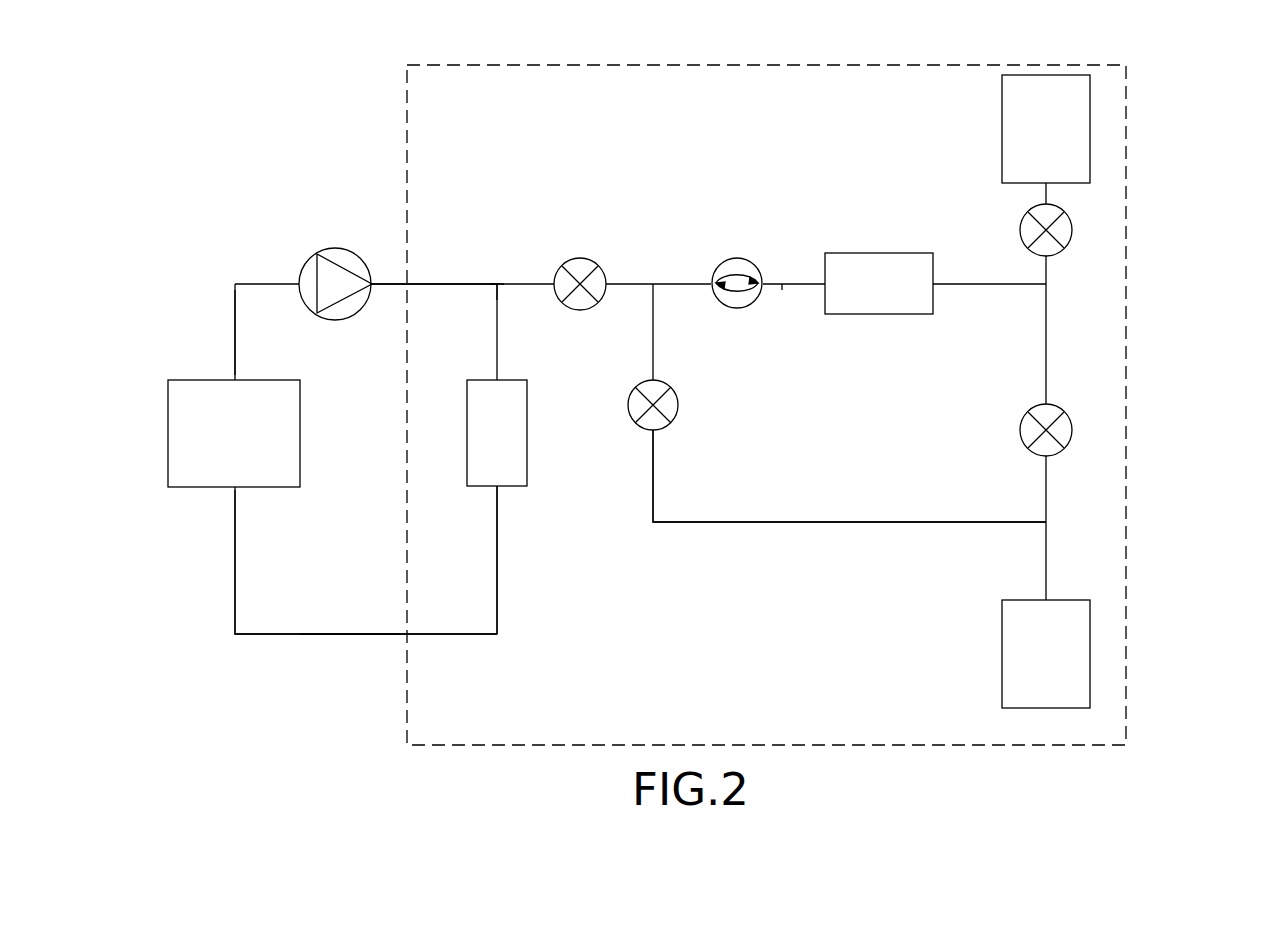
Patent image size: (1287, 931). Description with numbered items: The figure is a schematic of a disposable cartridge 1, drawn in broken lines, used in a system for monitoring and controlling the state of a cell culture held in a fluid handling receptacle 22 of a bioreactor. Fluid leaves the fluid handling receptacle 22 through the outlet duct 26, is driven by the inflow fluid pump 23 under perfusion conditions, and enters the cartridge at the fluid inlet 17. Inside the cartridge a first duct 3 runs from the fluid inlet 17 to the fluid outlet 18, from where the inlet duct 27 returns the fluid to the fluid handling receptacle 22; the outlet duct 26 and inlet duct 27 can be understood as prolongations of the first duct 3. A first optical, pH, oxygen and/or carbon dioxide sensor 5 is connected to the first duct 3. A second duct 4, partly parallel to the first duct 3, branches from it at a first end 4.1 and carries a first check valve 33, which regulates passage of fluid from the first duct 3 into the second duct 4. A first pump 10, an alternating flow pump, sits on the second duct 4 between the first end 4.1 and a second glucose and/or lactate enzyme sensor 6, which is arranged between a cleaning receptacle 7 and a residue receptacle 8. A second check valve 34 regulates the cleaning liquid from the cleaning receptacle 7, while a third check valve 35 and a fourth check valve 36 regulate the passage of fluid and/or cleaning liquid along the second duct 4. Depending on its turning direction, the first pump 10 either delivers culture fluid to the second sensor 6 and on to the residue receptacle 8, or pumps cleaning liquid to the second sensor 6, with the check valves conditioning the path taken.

The disposable cartridge 1 is at (1148, 310).
The first duct 3 is at (497, 541).
The second duct 4 is at (653, 455).
The first end 4.1 is at (497, 290).
The first sensor 5 is at (497, 433).
The second sensor 6 is at (879, 283).
The cleaning receptacle 7 is at (1046, 129).
The residue receptacle 8 is at (1046, 654).
The first pump 10 is at (742, 258).
The fluid inlet 17 is at (408, 287).
The fluid outlet 18 is at (408, 636).
The fluid handling receptacle 22 is at (234, 433).
The inflow fluid pump 23 is at (313, 263).
The outlet duct 26 is at (235, 340).
The inlet duct 27 is at (258, 636).
The first check valve 33 is at (593, 262).
The second check valve 34 is at (1024, 217).
The third check valve 35 is at (1024, 422).
The fourth check valve 36 is at (677, 392).